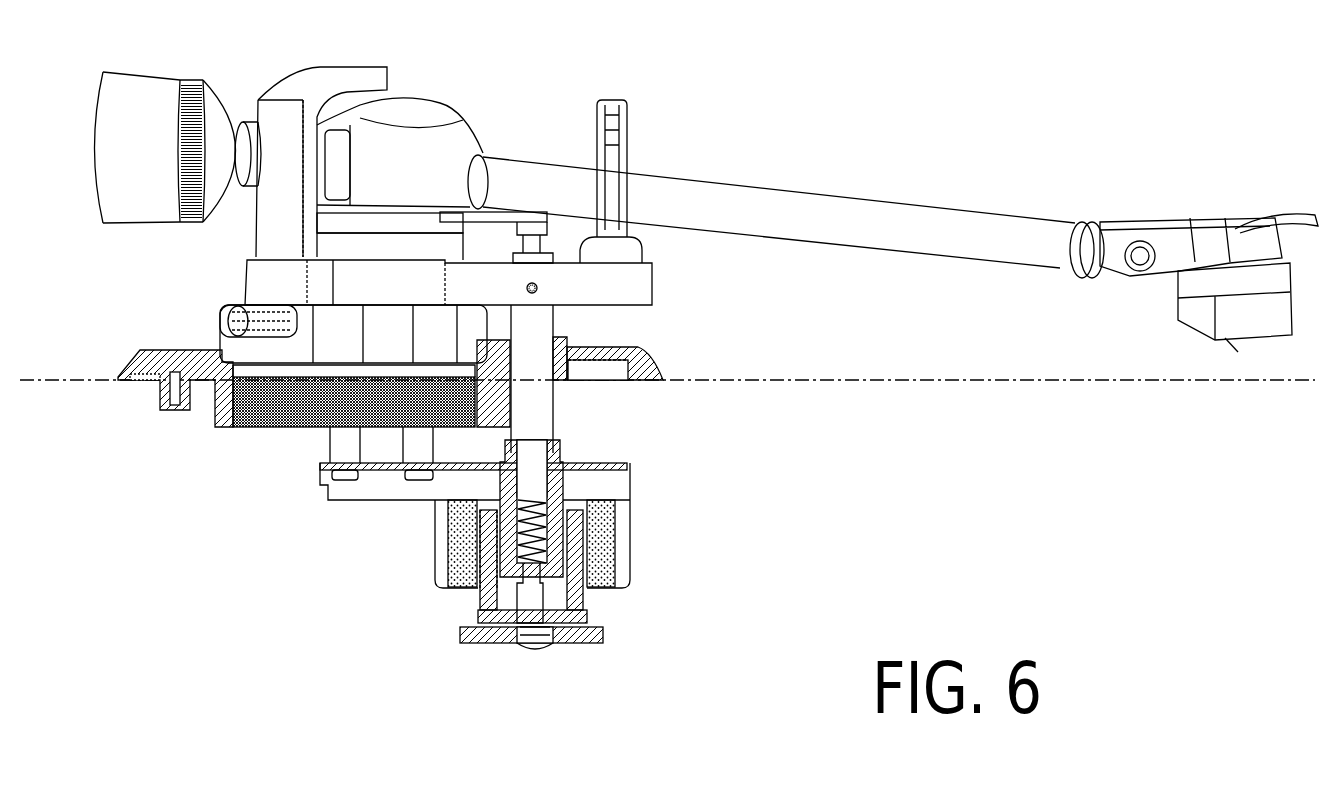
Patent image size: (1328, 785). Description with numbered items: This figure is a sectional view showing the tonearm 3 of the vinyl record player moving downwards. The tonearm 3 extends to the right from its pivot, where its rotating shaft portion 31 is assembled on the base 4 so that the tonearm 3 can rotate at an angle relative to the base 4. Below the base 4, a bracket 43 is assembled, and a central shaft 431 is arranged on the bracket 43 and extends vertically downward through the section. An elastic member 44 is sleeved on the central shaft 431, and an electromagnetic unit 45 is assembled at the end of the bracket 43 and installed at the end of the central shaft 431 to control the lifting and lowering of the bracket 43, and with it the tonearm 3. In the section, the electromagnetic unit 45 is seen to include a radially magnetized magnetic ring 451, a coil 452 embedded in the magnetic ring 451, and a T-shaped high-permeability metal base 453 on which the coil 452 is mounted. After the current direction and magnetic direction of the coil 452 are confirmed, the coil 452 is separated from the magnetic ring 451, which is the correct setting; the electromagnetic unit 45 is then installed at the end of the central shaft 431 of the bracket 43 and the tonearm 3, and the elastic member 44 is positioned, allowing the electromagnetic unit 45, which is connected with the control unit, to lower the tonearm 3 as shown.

The tonearm 3 is at (848, 205).
The rotating shaft portion 31 is at (370, 223).
The base 4 is at (140, 382).
The bracket 43 is at (528, 212).
The central shaft 431 is at (530, 483).
The elastic member 44 is at (547, 583).
The electromagnetic unit 45 is at (648, 515).
The magnetic ring 451 is at (448, 538).
The coil 452 is at (485, 597).
The T-shaped high-permeability metal base 453 is at (557, 493).